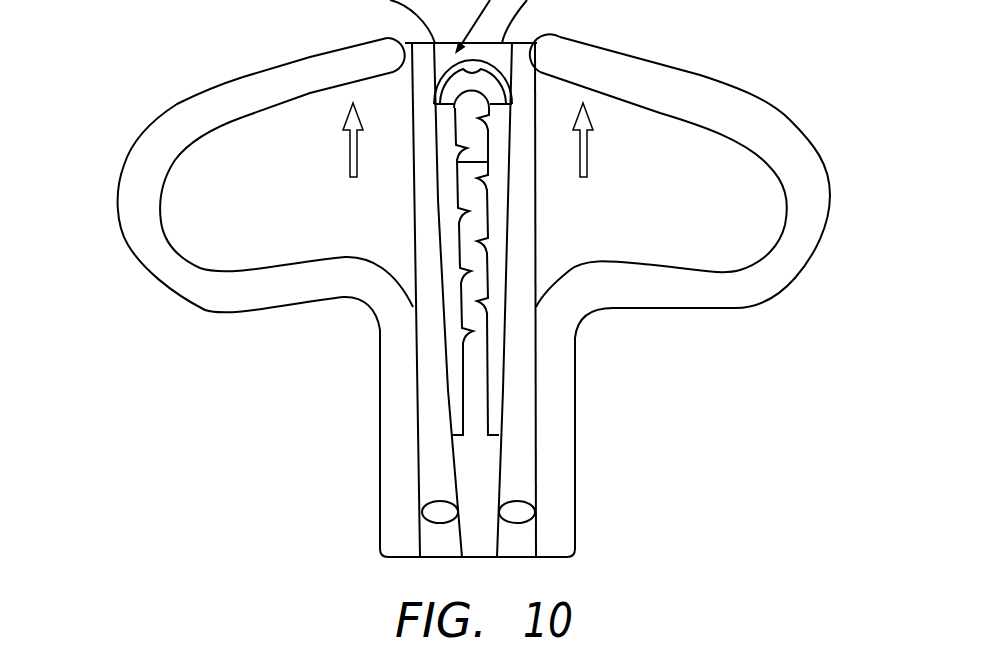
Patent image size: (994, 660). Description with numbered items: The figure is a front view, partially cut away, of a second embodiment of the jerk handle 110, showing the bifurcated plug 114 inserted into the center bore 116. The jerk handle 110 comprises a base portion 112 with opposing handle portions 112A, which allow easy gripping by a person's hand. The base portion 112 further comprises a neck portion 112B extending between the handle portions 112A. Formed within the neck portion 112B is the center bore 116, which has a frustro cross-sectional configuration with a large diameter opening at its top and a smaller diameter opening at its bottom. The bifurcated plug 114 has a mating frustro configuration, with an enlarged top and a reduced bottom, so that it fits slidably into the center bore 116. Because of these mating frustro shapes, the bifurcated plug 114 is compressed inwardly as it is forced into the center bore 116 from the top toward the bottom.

The jerk handle 110 is at (782, 78).
The base portion 112 is at (598, 39).
The handle portions 112A is at (235, 311).
The neck portion 112B is at (577, 443).
The bifurcated plug 114 is at (456, 385).
The center bore 116 is at (457, 477).